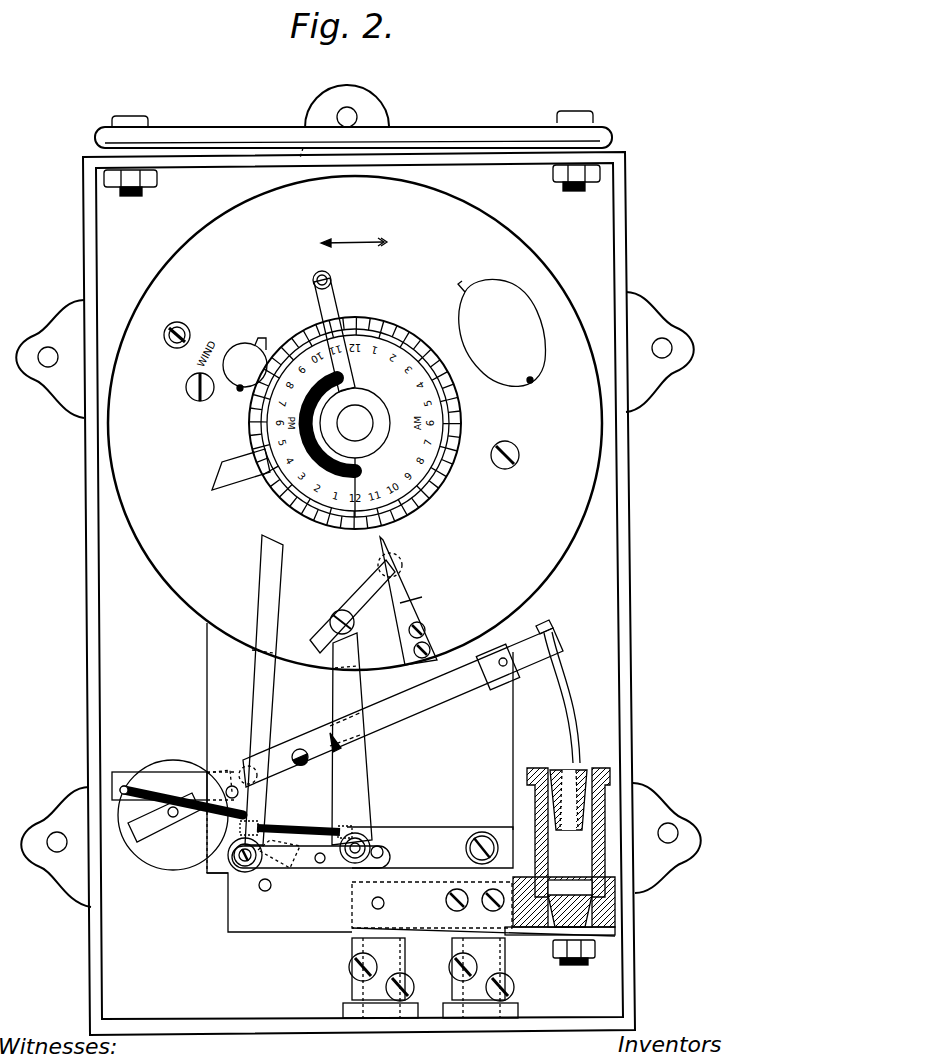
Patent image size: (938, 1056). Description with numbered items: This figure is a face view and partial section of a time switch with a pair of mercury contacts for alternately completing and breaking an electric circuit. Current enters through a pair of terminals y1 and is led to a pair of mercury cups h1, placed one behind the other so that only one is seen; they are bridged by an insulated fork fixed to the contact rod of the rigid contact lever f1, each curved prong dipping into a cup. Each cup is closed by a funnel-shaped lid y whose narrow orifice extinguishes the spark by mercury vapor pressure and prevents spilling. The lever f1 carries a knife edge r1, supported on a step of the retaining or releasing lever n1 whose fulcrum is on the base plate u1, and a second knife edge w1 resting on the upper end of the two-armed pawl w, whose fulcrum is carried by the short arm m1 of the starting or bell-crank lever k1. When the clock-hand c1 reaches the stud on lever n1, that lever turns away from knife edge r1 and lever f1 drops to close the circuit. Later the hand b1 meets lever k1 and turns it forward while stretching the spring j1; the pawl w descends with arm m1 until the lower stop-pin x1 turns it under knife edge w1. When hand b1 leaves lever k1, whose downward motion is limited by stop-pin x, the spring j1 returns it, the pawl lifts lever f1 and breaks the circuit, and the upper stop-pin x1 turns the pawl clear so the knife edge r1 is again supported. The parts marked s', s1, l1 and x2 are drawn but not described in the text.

The clock-hand b1 is at (340, 291).
The clock-hand c1 is at (225, 492).
The lever s' is at (412, 601).
The starting or bell-crank lever k1 is at (258, 686).
The spring j1 is at (147, 777).
The pivot s1 is at (232, 786).
The second knife edge w1 is at (300, 750).
The knife edge r1 is at (333, 742).
The releasing or retaining lever n1 is at (357, 697).
The contact lever f1 is at (433, 697).
The mercury cup h1 is at (530, 790).
The two-armed pawl w is at (353, 797).
The base plate u1 is at (428, 833).
The stop-pin x1 is at (388, 853).
The funnel-shaped lid y is at (574, 817).
The stop-pin x is at (262, 890).
The short arm m1 is at (300, 870).
The plate l1 is at (237, 873).
The terminal strip x2 is at (384, 903).
The terminal y1 is at (347, 948).